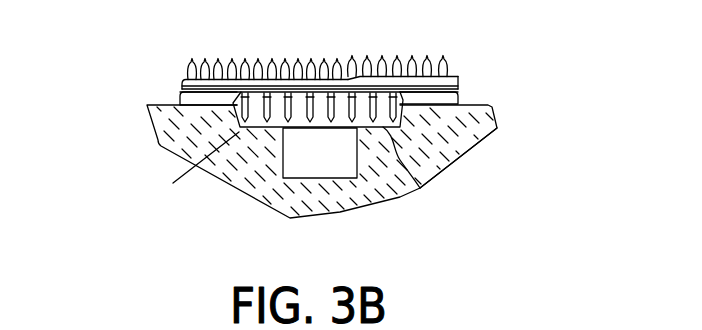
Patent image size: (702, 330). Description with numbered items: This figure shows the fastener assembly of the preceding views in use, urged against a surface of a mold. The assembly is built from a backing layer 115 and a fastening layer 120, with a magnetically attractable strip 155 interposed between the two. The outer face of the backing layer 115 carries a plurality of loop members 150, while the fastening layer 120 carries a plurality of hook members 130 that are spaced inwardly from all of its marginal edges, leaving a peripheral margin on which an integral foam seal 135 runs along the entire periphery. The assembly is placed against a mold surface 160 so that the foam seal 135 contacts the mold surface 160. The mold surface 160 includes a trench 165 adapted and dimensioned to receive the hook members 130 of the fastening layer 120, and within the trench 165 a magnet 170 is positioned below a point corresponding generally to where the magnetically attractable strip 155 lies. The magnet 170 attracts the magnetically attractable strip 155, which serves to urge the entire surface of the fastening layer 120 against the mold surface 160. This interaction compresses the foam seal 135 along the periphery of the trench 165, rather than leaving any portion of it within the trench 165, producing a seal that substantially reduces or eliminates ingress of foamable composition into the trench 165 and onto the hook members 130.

The backing layer 115 is at (182, 80).
The fastening layer 120 is at (458, 82).
The hook members 130 is at (239, 132).
The foam seal 135 is at (179, 95).
The loop members 150 is at (300, 78).
The magnetically attractable strip 155 is at (356, 76).
The mold surface 160 is at (489, 107).
The trench 165 is at (420, 188).
The magnet 170 is at (283, 178).